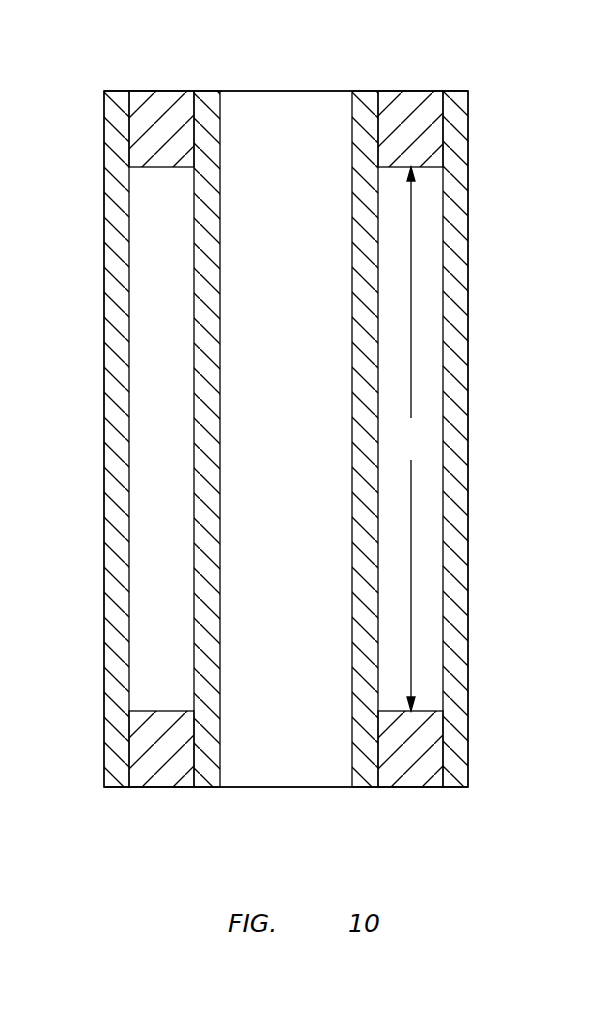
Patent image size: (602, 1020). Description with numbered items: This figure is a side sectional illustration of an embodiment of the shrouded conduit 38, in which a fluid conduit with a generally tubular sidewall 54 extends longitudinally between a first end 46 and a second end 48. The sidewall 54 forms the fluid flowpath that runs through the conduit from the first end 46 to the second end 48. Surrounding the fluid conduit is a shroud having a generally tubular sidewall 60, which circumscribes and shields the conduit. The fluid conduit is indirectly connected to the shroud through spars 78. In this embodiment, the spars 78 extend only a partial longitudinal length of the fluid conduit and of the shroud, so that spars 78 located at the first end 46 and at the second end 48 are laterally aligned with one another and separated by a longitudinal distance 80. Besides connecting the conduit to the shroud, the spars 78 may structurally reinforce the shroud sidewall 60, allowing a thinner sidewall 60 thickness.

The shrouded conduit 38 is at (516, 102).
The first end 46 is at (163, 90).
The second end 48 is at (160, 788).
The tubular sidewall 54 is at (355, 408).
The shroud sidewall 60 is at (105, 403).
The spar 78 is at (143, 133).
The longitudinal distance 80 is at (411, 439).